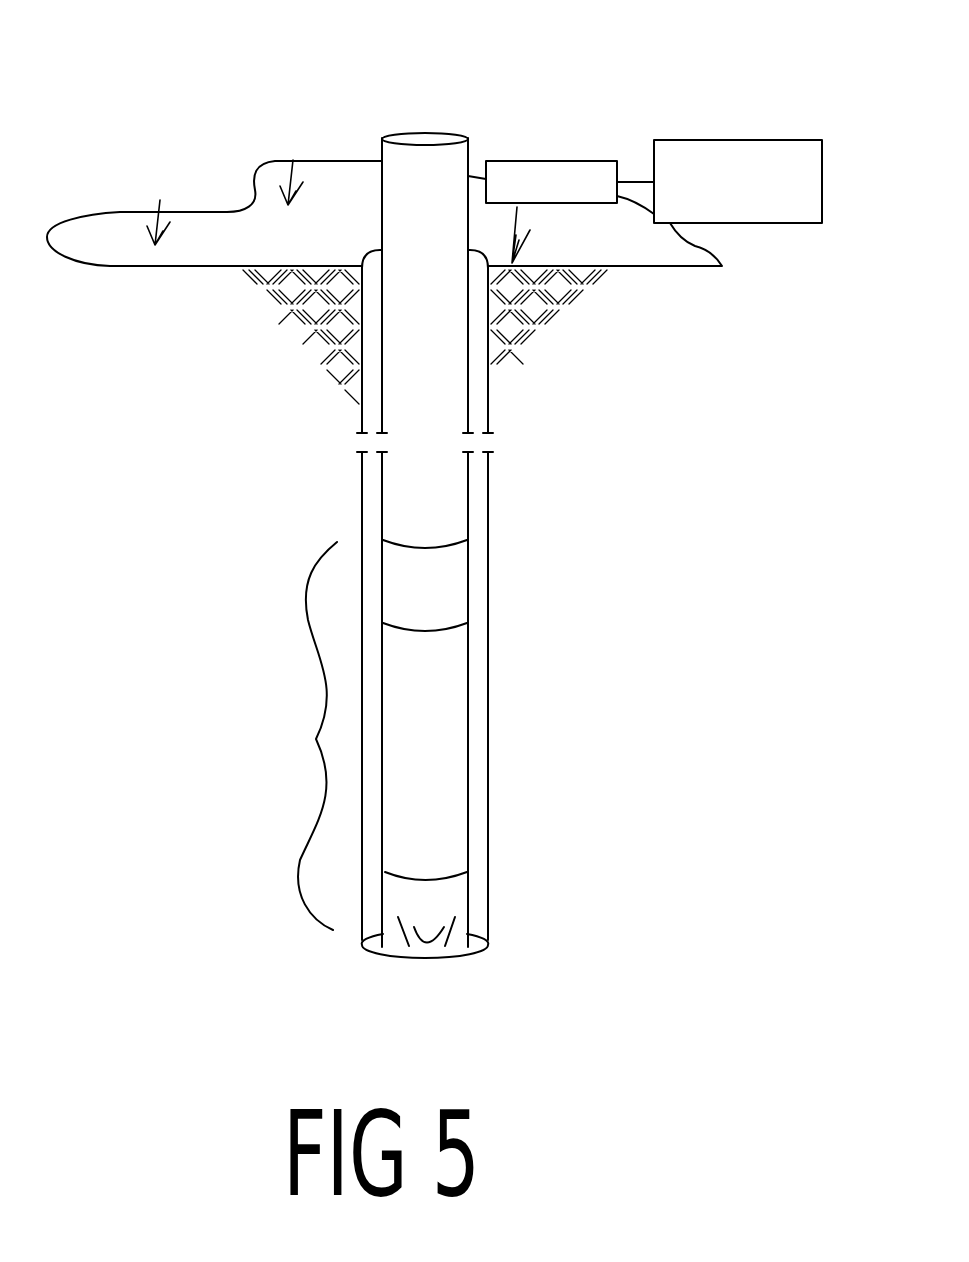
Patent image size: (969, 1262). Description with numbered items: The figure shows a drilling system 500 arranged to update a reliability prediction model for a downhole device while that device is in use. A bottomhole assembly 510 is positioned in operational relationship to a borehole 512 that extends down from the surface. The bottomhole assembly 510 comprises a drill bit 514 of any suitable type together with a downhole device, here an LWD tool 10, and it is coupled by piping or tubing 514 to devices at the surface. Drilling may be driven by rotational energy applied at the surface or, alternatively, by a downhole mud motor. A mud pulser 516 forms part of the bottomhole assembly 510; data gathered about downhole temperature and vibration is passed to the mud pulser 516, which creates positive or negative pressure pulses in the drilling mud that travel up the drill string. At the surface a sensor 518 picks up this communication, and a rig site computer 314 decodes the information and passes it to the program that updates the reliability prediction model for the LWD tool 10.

The drilling system 500 is at (483, 76).
The bottomhole assembly 510 is at (315, 740).
The drill bit / piping or tubing 514 is at (443, 388).
The mud pulser 516 is at (452, 562).
The borehole 512 is at (475, 597).
The LWD tool 10 is at (450, 703).
The sensor 518 is at (575, 160).
The rig site computer 314 is at (803, 145).